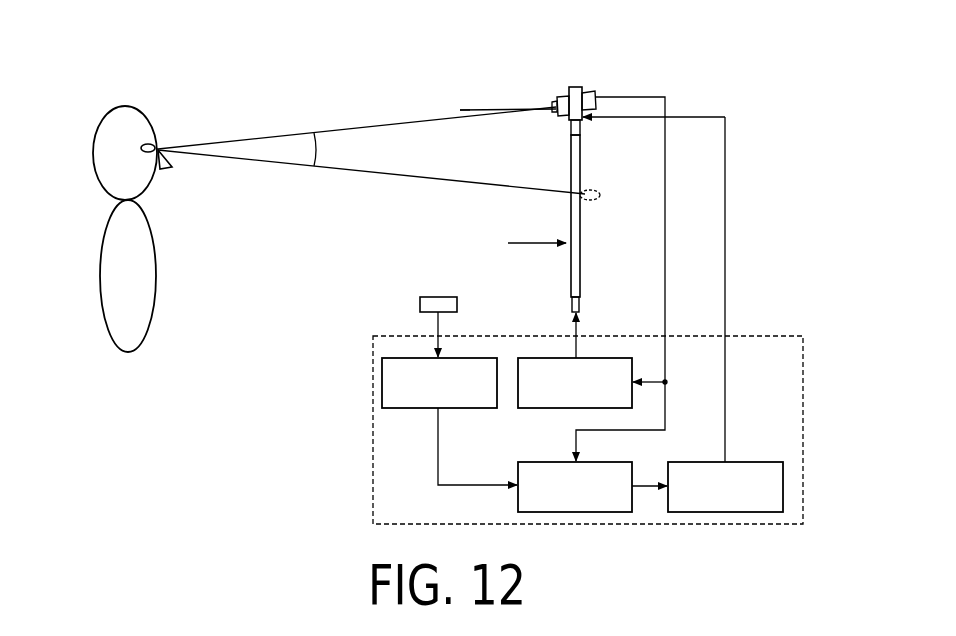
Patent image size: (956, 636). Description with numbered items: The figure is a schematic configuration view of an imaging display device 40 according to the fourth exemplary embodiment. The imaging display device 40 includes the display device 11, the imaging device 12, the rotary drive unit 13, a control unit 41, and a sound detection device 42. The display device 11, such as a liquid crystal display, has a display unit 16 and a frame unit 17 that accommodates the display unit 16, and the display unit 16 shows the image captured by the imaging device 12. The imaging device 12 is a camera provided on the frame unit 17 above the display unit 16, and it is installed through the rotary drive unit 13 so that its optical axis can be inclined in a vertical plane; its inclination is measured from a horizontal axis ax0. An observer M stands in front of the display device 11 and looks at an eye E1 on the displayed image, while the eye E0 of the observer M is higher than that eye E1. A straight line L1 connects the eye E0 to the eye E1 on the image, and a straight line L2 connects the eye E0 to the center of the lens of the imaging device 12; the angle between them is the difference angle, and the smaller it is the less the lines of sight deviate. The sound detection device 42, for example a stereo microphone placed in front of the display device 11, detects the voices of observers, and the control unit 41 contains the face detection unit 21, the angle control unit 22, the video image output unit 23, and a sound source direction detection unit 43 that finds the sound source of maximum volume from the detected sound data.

The observer M is at (140, 106).
The eye of the observer E0 is at (150, 142).
The eye on the image E1 is at (597, 191).
The straight line connecting the eye of the observer and the eye on the image L1 is at (287, 168).
The straight line connecting the eye of the observer and the center of the lens L2 is at (288, 135).
The horizontal axis ax0 is at (485, 107).
The display device 11 is at (502, 262).
The imaging device 12 is at (560, 100).
The rotary drive unit 13 is at (576, 91).
The display unit 16 is at (580, 250).
The frame unit 17 is at (581, 127).
The face detection unit 21 is at (530, 462).
The angle control unit 22 is at (757, 462).
The video image output unit 23 is at (530, 358).
The imaging display device 40 is at (661, 70).
The control unit 41 is at (373, 468).
The sound detection device 42 is at (420, 305).
The sound source direction detection unit 43 is at (382, 378).